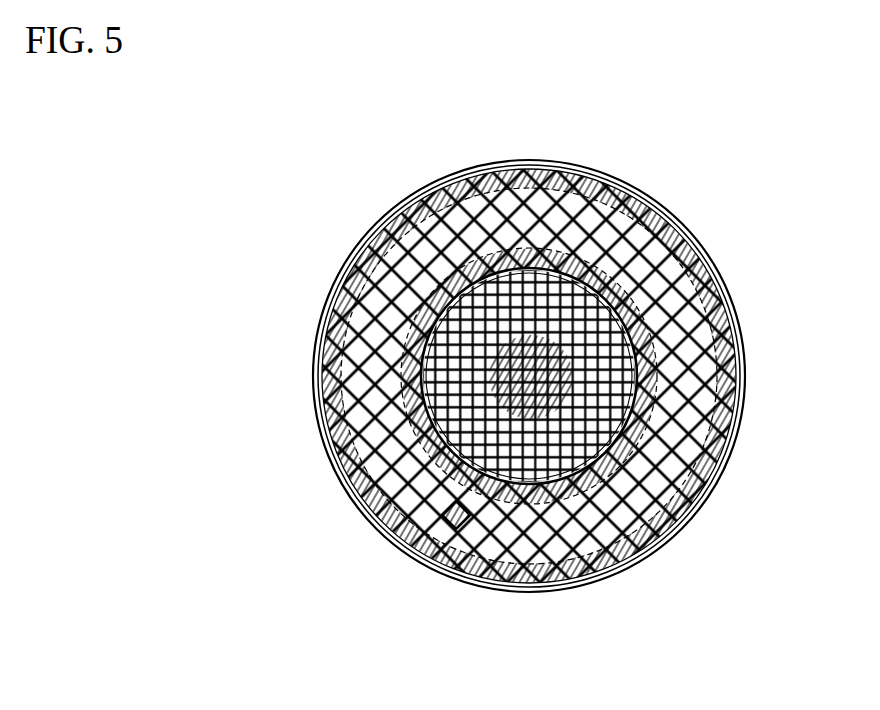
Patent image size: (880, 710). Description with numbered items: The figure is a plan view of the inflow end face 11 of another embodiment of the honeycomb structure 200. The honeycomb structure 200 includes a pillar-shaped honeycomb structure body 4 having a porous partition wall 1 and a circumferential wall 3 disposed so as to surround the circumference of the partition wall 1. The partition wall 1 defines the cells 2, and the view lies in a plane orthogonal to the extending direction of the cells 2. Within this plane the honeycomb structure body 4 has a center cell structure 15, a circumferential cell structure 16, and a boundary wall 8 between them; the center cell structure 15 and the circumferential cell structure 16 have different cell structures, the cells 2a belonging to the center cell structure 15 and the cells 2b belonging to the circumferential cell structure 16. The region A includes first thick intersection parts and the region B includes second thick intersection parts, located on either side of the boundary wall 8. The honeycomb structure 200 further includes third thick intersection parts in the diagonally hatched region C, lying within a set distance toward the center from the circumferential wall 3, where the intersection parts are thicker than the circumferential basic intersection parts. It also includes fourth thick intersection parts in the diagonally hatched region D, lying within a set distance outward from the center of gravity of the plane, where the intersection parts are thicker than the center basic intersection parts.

The honeycomb structure 200 is at (849, 76).
The partition wall 1 is at (550, 213).
The cell 2 is at (529, 325).
The cell in center cell structure 2a is at (620, 313).
The cell in circumferential cell structure 2b is at (475, 202).
The circumferential wall 3 is at (715, 268).
The honeycomb structure body 4 is at (742, 432).
The boundary wall 8 is at (608, 360).
The inflow end face 11 is at (372, 212).
The center cell structure 15 is at (462, 438).
The circumferential cell structure 16 is at (462, 521).
The region including first thick intersection parts A is at (563, 397).
The region including second thick intersection parts B is at (552, 480).
The region including third thick intersection parts C is at (510, 567).
The region including fourth thick intersection parts D is at (652, 486).